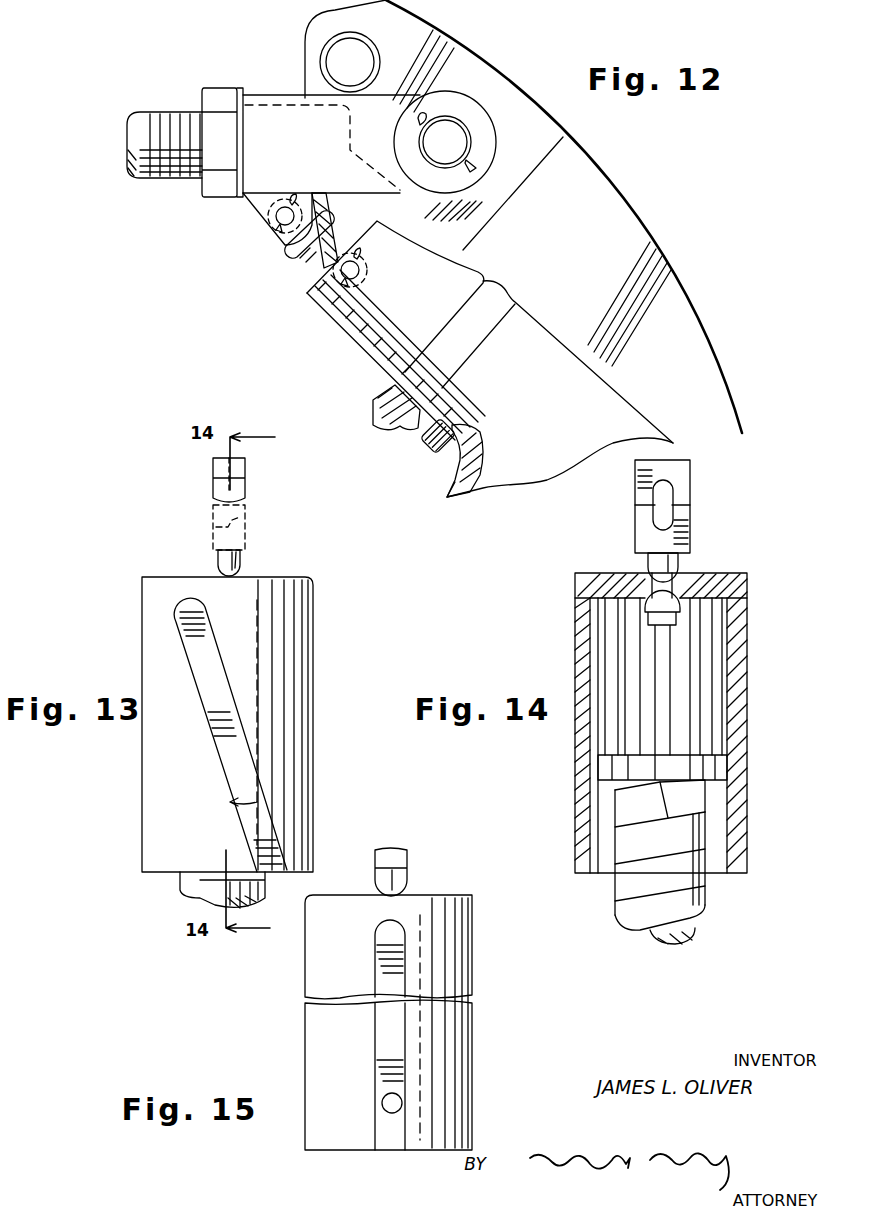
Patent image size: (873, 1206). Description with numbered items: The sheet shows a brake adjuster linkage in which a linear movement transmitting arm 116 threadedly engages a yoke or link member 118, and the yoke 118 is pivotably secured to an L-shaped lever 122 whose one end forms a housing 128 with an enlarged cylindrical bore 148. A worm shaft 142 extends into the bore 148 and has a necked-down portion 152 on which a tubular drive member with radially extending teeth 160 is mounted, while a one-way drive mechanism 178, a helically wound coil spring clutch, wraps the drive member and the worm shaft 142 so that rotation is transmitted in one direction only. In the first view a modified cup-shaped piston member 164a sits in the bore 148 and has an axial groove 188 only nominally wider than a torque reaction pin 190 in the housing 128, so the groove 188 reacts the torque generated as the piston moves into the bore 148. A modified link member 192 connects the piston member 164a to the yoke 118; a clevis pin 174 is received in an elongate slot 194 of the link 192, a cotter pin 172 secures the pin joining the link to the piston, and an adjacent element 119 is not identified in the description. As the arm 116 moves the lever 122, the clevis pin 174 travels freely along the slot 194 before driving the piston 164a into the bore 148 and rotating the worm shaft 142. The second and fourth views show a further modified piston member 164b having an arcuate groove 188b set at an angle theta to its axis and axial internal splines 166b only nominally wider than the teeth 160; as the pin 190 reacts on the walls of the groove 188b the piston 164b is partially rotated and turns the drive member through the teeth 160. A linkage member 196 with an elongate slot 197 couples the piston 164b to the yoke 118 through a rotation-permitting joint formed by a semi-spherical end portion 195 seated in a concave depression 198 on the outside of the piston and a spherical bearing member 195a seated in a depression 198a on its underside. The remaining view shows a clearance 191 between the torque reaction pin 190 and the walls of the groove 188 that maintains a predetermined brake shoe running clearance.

In FIG. 12, the linear movement transmitting arm 116 is at (147, 120).
In FIG. 12, the yoke or link member 118 is at (224, 76).
In FIG. 12, the pivot lug 119 is at (258, 210).
In FIG. 12, the lever 122 is at (500, 78).
In FIG. 12, the housing 128 is at (470, 510).
In FIG. 13, the worm shaft 142 is at (200, 896).
In FIG. 14, the worm shaft 142 is at (700, 926).
In FIG. 12, the cylindrical bore 148 is at (455, 458).
In FIG. 14, the necked-down portion 152 is at (616, 784).
In FIG. 14, the teeth 160 is at (598, 767).
In FIG. 12, the modified piston member 164a is at (305, 294).
In FIG. 15, the modified piston member 164a is at (468, 928).
In FIG. 13, the further modified piston member 164b is at (150, 595).
In FIG. 14, the further modified piston member 164b is at (608, 578).
In FIG. 14, the axial splines 166b is at (712, 664).
In FIG. 12, the cotter pin 172 is at (313, 204).
In FIG. 12, the clevis pin 174 is at (283, 206).
In FIG. 14, the one-way drive mechanism 178 is at (618, 898).
In FIG. 12, the axial groove 188 is at (365, 350).
In FIG. 15, the axial groove 188 is at (385, 1032).
In FIG. 13, the arcuate groove 188b is at (182, 640).
In FIG. 14, the arcuate groove 188b is at (580, 660).
In FIG. 12, the torque reaction pin 190 is at (420, 440).
In FIG. 15, the torque reaction pin 190 is at (395, 1108).
In FIG. 15, the clearance 191 is at (377, 1110).
In FIG. 12, the modified link member 192 is at (296, 252).
In FIG. 12, the elongate slot 194 is at (322, 256).
In FIG. 13, the semi-spherical end portion 195 is at (214, 566).
In FIG. 14, the semi-spherical end portion 195 is at (650, 565).
In FIG. 14, the spherical bearing member 195a is at (646, 609).
In FIG. 13, the linkage member 196 is at (212, 486).
In FIG. 14, the linkage member 196 is at (690, 526).
In FIG. 15, the linkage member 196 is at (407, 862).
In FIG. 13, the elongate slot 197 is at (246, 518).
In FIG. 14, the elongate slot 197 is at (672, 490).
In FIG. 14, the semi-spherical concave depression 198 is at (678, 588).
In FIG. 14, the semi-spherical depression 198a is at (690, 612).